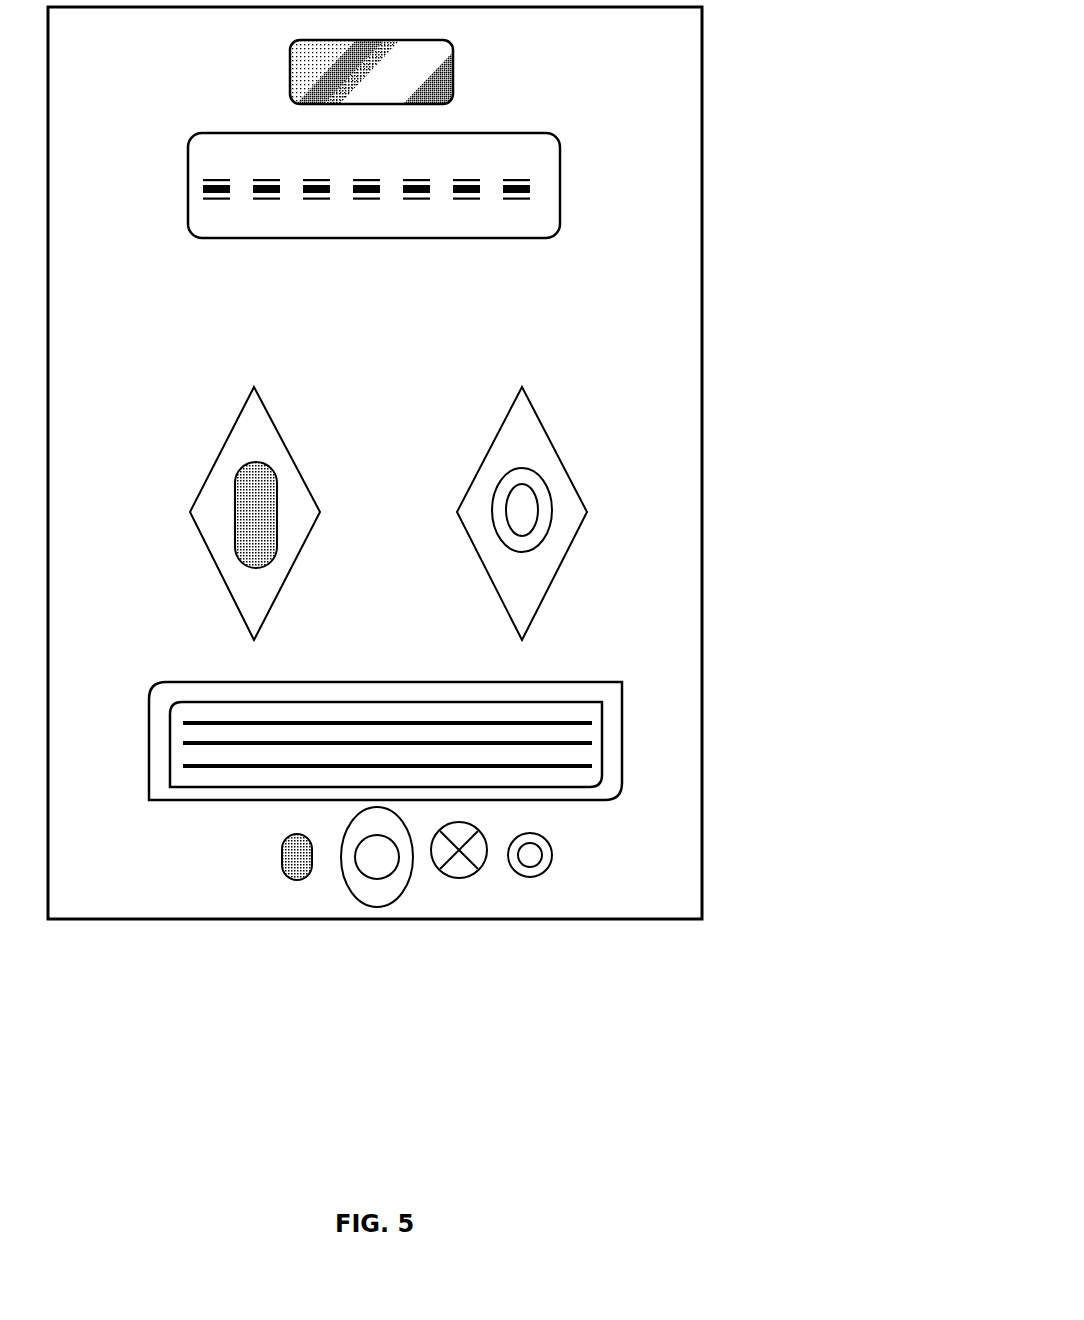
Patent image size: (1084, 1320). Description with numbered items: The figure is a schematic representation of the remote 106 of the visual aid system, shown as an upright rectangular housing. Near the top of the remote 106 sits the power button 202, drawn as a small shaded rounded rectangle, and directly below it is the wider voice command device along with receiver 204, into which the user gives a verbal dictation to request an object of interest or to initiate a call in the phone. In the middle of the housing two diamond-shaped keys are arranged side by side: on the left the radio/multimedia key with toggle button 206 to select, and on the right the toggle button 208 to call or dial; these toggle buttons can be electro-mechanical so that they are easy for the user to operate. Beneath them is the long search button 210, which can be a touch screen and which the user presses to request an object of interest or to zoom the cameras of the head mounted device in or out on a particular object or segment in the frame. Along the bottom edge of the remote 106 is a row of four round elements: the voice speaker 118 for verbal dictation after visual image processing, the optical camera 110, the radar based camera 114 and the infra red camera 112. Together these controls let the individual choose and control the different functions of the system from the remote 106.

The remote 106 is at (765, 78).
The power button 202 is at (455, 67).
The voice command device along with receiver 204 is at (558, 167).
The radio/multimedia key with toggle button 206 is at (275, 427).
The toggle button 208 is at (537, 413).
The search button 210 is at (622, 752).
The voice speaker 118 is at (297, 881).
The optical camera 110 is at (377, 907).
The radar based camera 114 is at (459, 880).
The infra red camera 112 is at (544, 880).